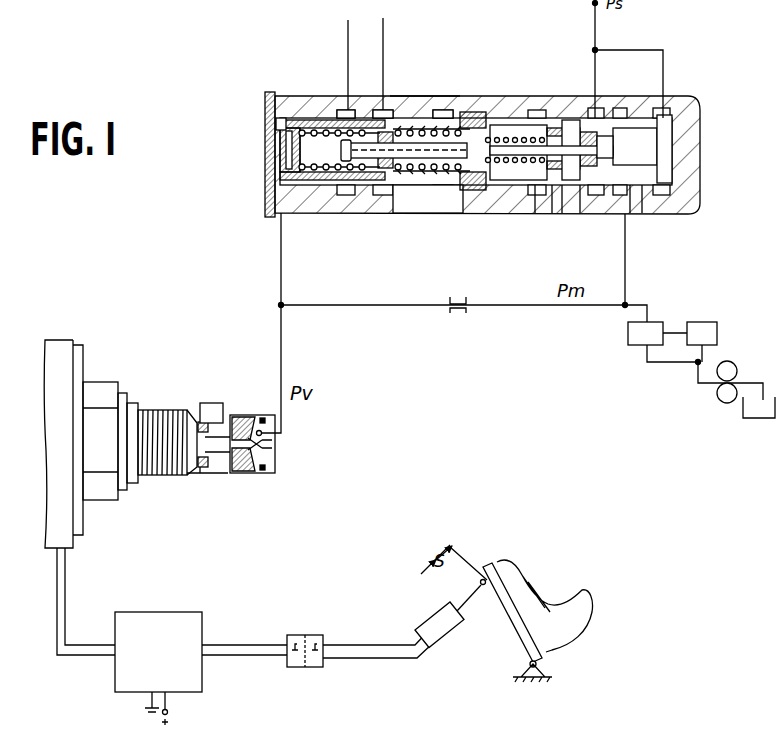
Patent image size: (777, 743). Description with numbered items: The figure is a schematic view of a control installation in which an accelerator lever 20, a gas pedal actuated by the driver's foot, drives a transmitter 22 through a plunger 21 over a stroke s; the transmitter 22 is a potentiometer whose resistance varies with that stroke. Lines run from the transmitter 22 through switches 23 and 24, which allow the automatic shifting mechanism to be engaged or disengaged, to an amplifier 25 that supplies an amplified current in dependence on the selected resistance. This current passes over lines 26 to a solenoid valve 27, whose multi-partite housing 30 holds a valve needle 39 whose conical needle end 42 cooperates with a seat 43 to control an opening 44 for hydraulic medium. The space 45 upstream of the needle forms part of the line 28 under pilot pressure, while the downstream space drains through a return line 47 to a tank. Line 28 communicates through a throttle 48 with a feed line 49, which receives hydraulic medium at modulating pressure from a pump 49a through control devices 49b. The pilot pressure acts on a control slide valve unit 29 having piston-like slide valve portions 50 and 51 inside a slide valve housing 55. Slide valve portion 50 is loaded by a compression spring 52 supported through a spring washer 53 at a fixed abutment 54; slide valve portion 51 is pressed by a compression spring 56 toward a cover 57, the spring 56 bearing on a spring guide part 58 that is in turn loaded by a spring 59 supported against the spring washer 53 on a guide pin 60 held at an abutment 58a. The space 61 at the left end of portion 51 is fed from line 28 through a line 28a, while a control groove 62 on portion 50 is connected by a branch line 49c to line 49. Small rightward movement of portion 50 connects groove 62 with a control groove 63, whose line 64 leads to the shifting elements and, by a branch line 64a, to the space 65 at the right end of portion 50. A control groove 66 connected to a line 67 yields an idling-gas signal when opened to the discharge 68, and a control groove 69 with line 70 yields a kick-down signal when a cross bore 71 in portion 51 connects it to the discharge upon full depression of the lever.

The accelerator lever 20 is at (525, 640).
The plunger 21 is at (474, 600).
The transmitter 22 is at (440, 648).
The switch 23 is at (320, 668).
The switch 24 is at (298, 668).
The amplifier 25 is at (203, 683).
The lines 26 is at (66, 590).
The solenoid valve 27 is at (99, 380).
The line 28 is at (283, 366).
The line 28a is at (280, 275).
The control slide valve unit 29 is at (468, 75).
The valve housing 30 is at (76, 340).
The valve needle 39 is at (196, 420).
The conical needle end 42 is at (233, 417).
The seat 43 is at (232, 474).
The opening 44 is at (238, 439).
The space 45 is at (266, 470).
The return line 47 is at (212, 480).
The throttle 48 is at (458, 313).
The feed line 49 is at (562, 310).
The pump 49a is at (722, 398).
The control devices 49b is at (650, 322).
The branch line 49c is at (627, 284).
The slide valve portion 50 is at (640, 205).
The slide valve portion 51 is at (289, 118).
The compression spring 52 is at (518, 125).
The spring washer 53 is at (498, 210).
The fixed abutment 54 is at (478, 114).
The slide valve housing 55 is at (412, 105).
The compression spring 56 is at (318, 122).
The cover 57 is at (264, 117).
The spring guide part 58 is at (360, 125).
The abutment 58a is at (332, 200).
The spring 59 is at (400, 205).
The guide pin 60 is at (441, 118).
The space 61 is at (276, 186).
The control groove 62 is at (612, 210).
The control groove 63 is at (590, 197).
The line 64 is at (594, 22).
The branch line 64a is at (666, 58).
The space 65 is at (673, 162).
The control groove 66 is at (380, 198).
The line 67 is at (384, 24).
The discharge 68 is at (440, 203).
The control groove 69 is at (338, 198).
The line 70 is at (347, 25).
The cross bore 71 is at (308, 205).